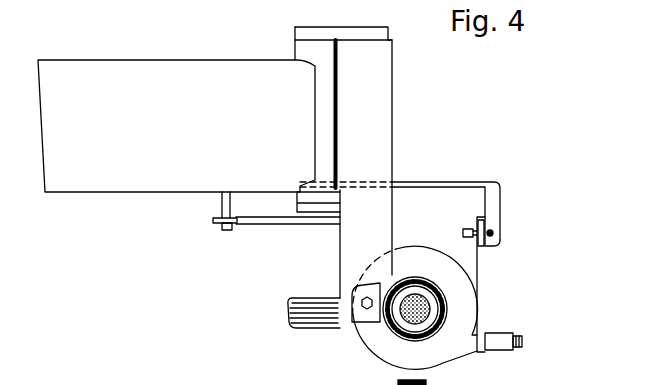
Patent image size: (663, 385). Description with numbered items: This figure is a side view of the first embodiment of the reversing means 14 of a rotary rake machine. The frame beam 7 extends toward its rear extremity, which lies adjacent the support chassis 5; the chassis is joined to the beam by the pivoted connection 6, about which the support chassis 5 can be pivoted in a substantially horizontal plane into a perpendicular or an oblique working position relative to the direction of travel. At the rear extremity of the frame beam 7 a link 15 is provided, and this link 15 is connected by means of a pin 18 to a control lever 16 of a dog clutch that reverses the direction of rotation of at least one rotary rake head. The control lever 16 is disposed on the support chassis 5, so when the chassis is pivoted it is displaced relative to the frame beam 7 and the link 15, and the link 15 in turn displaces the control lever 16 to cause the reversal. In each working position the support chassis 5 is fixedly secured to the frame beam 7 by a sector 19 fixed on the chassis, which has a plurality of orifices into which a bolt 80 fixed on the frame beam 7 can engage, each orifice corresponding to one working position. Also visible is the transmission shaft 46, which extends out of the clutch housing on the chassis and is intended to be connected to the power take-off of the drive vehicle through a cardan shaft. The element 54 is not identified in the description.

The support chassis 5 is at (392, 328).
The pivoted connection 6 is at (293, 43).
The frame beam 7 is at (95, 184).
The reversing means 14 is at (468, 175).
The link 15 is at (437, 181).
The control lever 16 is at (486, 281).
The pin 18 is at (492, 233).
The sector 19 is at (250, 226).
The transmission shaft 46 is at (291, 328).
The bolt 54 is at (505, 336).
The bolt 80 is at (220, 200).